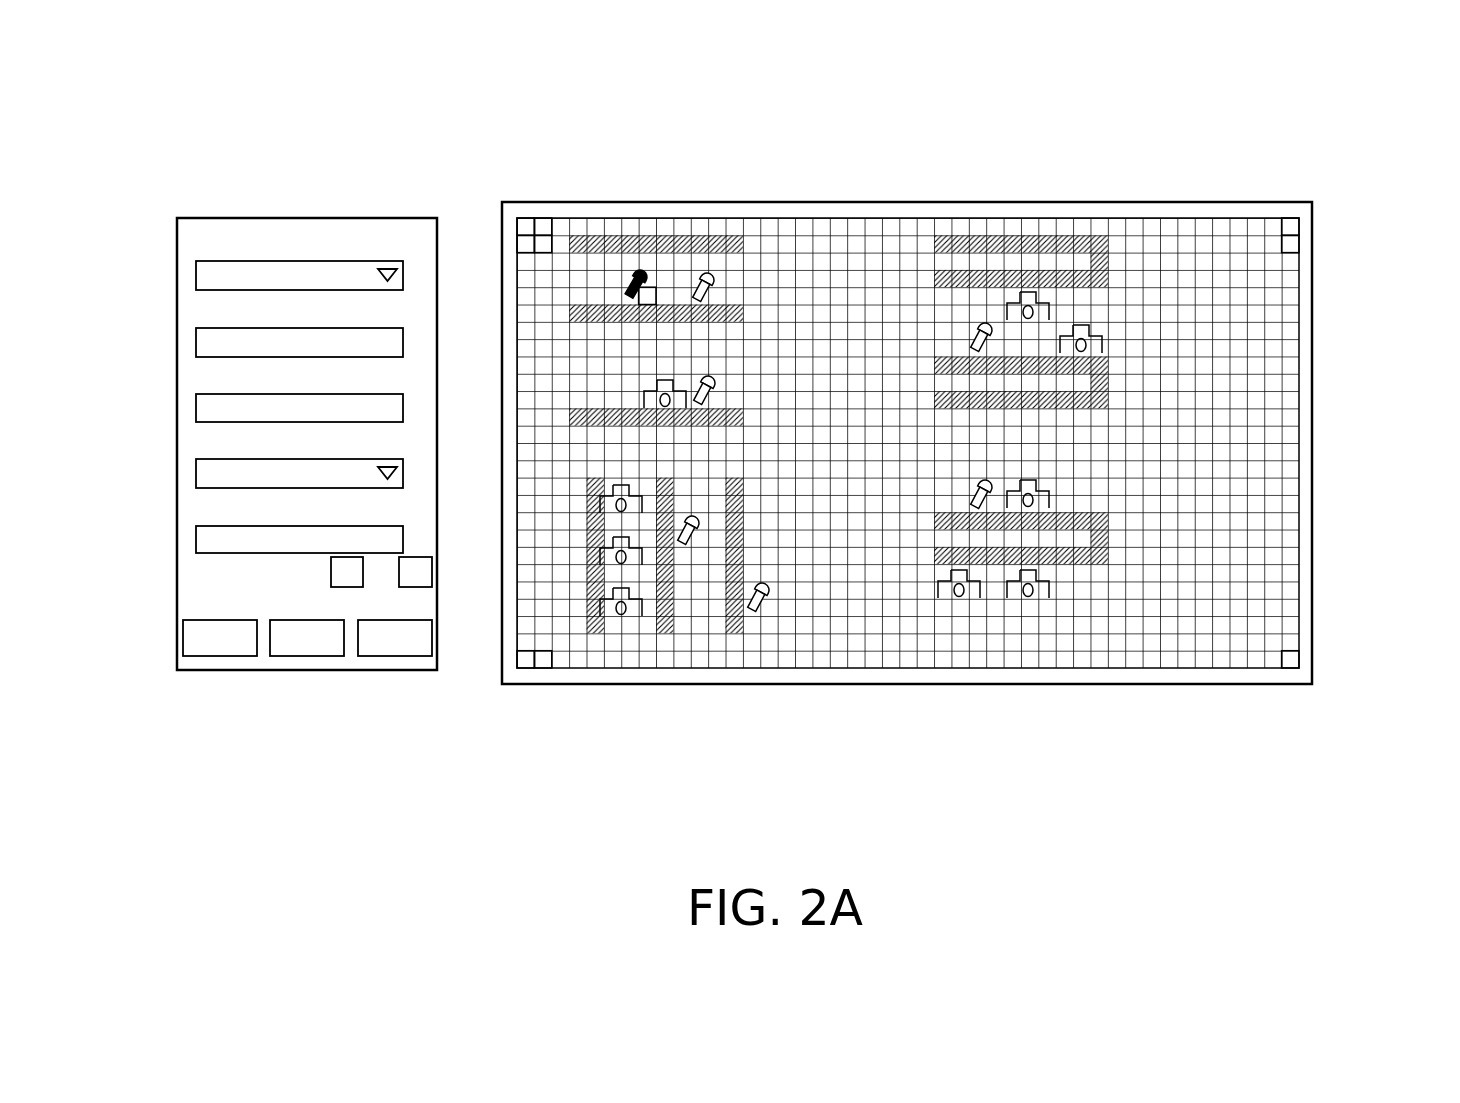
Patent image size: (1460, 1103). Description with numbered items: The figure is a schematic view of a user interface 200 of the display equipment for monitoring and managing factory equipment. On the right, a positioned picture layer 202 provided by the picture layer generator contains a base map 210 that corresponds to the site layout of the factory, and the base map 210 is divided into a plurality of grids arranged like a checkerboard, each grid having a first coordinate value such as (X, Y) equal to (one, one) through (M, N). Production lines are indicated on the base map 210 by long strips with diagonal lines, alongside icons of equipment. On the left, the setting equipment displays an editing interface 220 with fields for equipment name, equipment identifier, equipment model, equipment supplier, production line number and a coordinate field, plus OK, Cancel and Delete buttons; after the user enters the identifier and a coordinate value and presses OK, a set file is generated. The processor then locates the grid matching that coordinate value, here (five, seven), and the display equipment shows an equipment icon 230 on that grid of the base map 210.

The user interface 200 is at (130, 66).
The positioned picture layer 202 is at (1088, 684).
The base map 210 is at (1198, 668).
The editing interface 220 is at (192, 205).
The equipment icon 230 is at (641, 271).